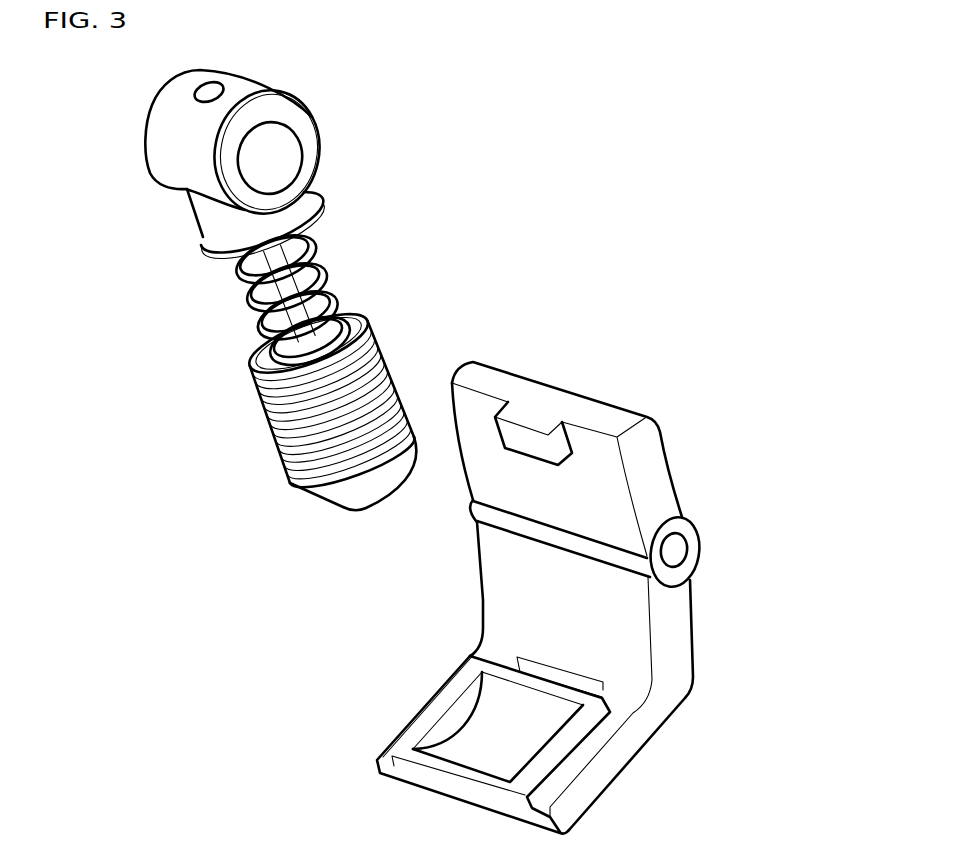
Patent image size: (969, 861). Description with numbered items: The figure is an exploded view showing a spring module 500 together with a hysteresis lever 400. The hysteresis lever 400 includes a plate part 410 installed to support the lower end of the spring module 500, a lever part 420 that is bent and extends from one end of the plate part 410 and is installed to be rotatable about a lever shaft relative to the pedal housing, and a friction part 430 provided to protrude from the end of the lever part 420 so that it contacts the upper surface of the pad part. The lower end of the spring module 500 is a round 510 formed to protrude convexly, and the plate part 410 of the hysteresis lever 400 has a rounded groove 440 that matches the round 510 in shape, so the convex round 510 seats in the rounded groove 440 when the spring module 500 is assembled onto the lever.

The hysteresis lever 400 is at (522, 548).
The plate part 410 is at (608, 762).
The lever part 420 is at (655, 477).
The friction part 430 is at (530, 442).
The rounded groove 440 is at (482, 737).
The spring module 500 is at (239, 321).
The round 510 is at (367, 510).